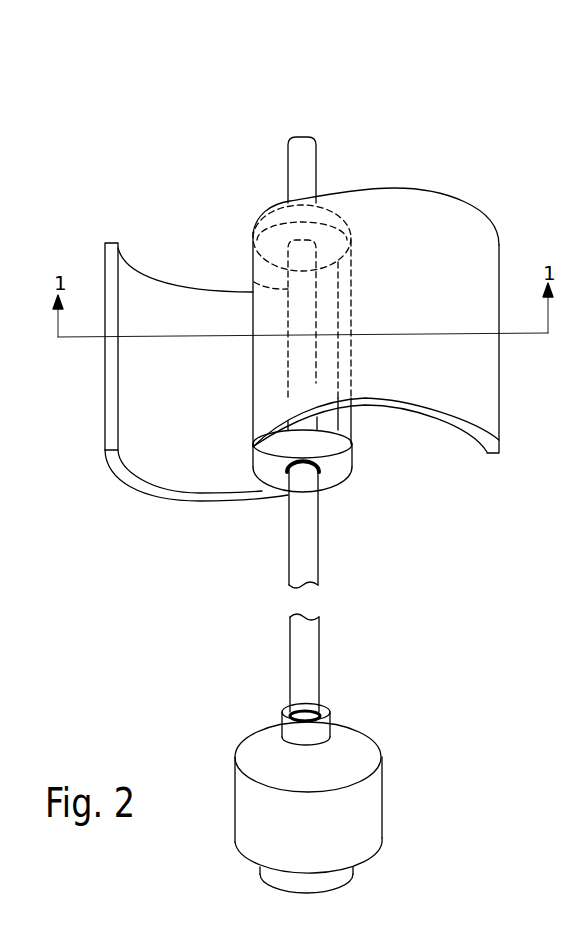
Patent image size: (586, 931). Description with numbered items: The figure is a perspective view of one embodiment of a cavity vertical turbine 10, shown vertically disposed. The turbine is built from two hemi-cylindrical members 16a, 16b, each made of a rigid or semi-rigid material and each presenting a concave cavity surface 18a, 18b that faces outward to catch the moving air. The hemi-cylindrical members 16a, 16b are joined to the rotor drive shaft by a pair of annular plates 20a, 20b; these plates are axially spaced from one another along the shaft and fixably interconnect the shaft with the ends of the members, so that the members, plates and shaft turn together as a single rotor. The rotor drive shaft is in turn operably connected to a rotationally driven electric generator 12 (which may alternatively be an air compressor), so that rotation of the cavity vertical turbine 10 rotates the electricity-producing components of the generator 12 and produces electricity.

The cavity vertical turbine 10 is at (102, 168).
The rotationally driven electric generator 12 is at (365, 803).
The hemi-cylindrical member 16a is at (435, 237).
The hemi-cylindrical member 16b is at (110, 247).
The cavity surface 18a is at (437, 413).
The cavity surface 18b is at (165, 443).
The annular plate 20a is at (336, 468).
The annular plate 20b is at (332, 217).